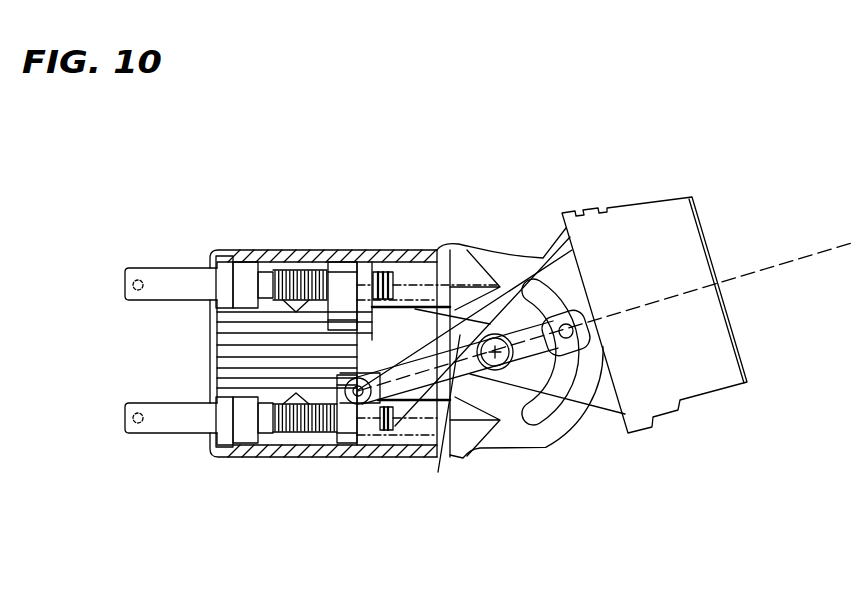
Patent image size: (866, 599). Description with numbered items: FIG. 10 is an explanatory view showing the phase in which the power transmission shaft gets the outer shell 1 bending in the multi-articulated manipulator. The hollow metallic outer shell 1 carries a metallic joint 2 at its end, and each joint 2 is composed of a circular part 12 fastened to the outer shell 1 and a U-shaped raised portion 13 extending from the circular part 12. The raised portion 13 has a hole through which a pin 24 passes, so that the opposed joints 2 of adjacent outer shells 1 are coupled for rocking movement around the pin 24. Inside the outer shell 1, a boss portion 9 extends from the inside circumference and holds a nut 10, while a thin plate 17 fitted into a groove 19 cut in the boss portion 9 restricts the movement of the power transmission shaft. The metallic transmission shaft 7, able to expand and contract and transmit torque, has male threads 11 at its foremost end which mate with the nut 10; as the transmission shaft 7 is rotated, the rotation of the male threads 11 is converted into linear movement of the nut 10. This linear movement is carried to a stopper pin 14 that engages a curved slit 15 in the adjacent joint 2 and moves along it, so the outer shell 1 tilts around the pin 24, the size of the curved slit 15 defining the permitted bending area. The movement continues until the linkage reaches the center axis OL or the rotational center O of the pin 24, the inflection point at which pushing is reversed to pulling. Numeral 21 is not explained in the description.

The outer shell 1 is at (302, 250).
The joint 2 is at (429, 248).
The transmission shaft 7 is at (432, 378).
The boss portion 9 is at (254, 252).
The nut 10 is at (376, 264).
The male threads 11 is at (300, 274).
The circular part 12 is at (583, 225).
The raised portion 13 is at (518, 405).
The stopper pin 14 is at (563, 255).
The curved slit 15 is at (560, 393).
The thin plate 17 is at (242, 262).
The groove 19 is at (231, 258).
The plug 21 is at (160, 275).
The pin 24 is at (492, 334).
The rotational center O is at (510, 313).
The center axis OL is at (683, 296).